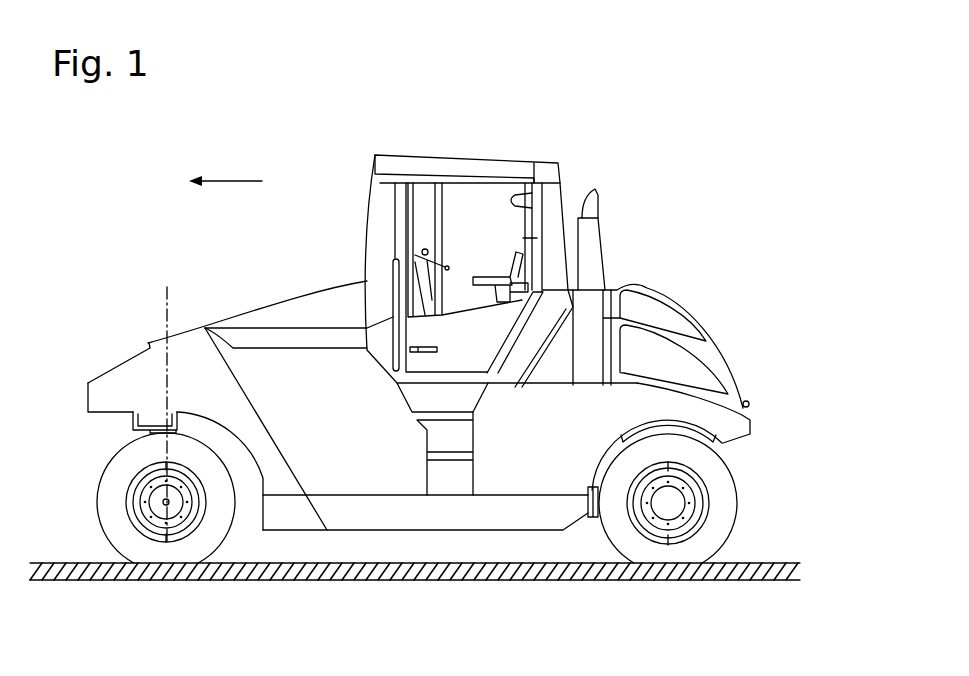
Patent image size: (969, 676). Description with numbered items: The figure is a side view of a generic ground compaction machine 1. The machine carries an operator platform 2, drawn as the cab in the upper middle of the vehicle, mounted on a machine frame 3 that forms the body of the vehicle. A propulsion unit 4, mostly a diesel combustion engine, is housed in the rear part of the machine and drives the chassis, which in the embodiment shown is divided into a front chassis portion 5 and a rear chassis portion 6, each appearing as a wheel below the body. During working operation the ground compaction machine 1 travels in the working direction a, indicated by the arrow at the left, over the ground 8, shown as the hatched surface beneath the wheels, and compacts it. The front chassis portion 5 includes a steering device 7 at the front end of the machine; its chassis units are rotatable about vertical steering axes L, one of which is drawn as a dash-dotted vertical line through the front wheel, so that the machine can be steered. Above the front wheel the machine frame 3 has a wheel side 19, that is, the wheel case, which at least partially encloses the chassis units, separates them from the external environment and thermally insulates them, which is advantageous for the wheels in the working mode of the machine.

The ground compaction machine 1 is at (548, 128).
The operator platform 2 is at (473, 208).
The machine frame 3 is at (313, 385).
The propulsion unit 4 is at (633, 360).
The front chassis portion 5 is at (204, 555).
The rear chassis portion 6 is at (699, 558).
The steering device 7 is at (98, 438).
The ground 8 is at (470, 565).
The wheel side 19 is at (231, 448).
The working direction a is at (211, 183).
The vertical steering axis L is at (167, 327).